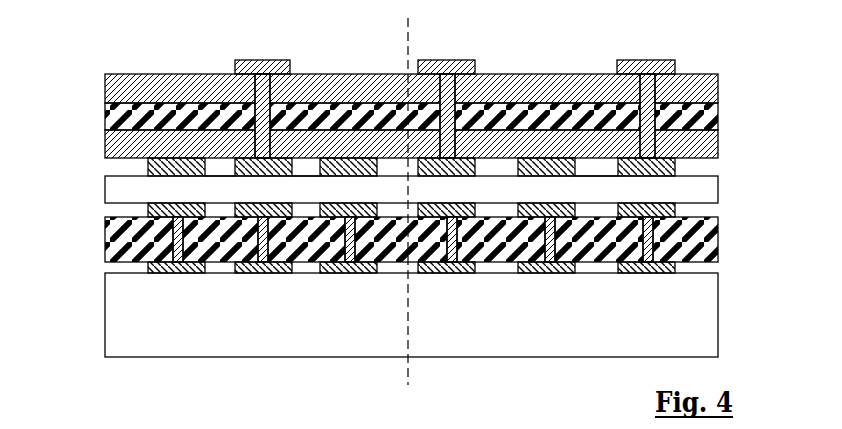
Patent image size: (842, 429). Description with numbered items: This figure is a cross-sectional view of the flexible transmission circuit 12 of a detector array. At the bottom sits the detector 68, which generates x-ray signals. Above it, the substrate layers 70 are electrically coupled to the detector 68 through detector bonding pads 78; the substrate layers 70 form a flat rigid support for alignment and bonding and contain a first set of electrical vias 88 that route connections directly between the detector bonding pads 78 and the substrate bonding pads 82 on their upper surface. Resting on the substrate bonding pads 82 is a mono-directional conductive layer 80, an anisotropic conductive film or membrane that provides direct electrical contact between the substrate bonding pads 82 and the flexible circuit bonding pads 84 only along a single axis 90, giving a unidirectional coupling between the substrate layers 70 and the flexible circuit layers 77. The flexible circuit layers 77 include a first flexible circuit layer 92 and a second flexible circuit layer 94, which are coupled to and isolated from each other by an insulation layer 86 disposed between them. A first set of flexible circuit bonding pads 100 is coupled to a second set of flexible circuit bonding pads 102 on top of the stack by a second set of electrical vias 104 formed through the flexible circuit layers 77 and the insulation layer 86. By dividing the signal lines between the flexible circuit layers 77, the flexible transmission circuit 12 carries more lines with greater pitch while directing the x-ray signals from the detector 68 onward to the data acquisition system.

The flexible transmission circuit 12 is at (750, 58).
The detector 68 is at (720, 295).
The substrate layers 70 is at (440, 266).
The flexible circuit layers 77 is at (402, 86).
The detector bonding pads 78 is at (148, 268).
The mono-directional conductive layer 80 is at (720, 185).
The substrate bonding pads 82 is at (148, 209).
The flexible circuit bonding pads 84 is at (148, 166).
The insulation layer 86 is at (105, 113).
The first set of electrical vias 88 is at (266, 273).
The single axis 90 is at (410, 32).
The first flexible circuit layer 92 is at (105, 147).
The second flexible circuit layer 94 is at (105, 86).
The first set of flexible circuit bonding pads 100 is at (208, 177).
The second set of flexible circuit bonding pads 102 is at (258, 58).
The second set of electrical vias 104 is at (247, 110).